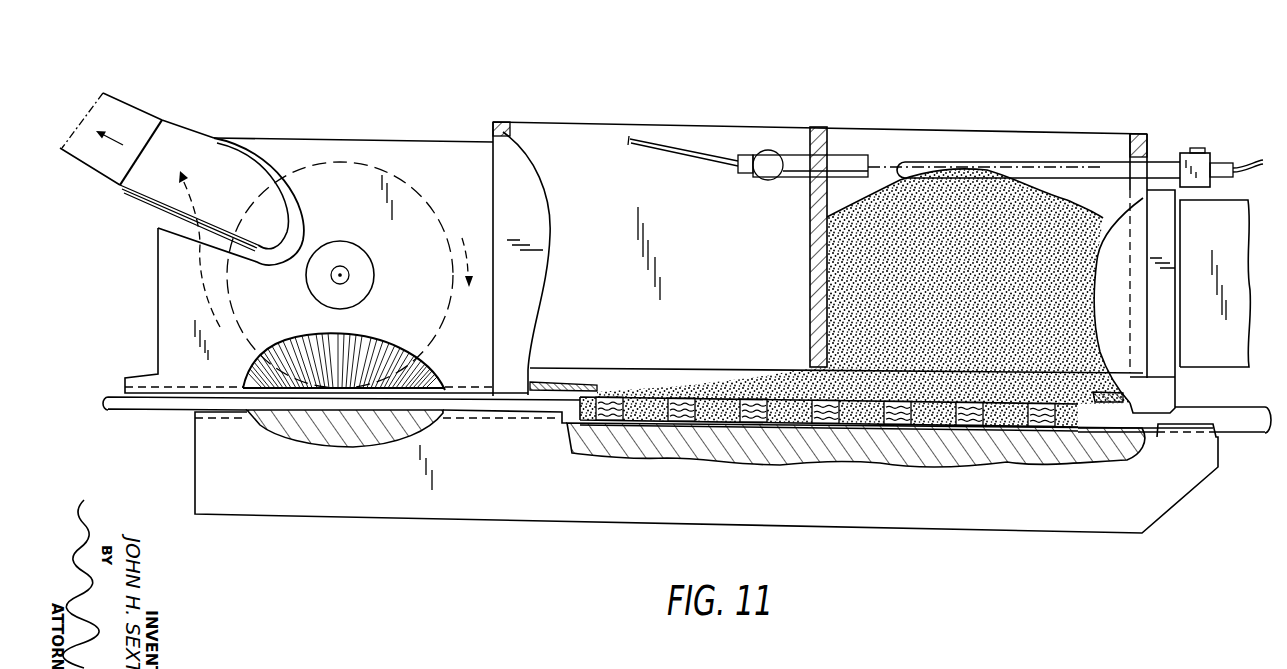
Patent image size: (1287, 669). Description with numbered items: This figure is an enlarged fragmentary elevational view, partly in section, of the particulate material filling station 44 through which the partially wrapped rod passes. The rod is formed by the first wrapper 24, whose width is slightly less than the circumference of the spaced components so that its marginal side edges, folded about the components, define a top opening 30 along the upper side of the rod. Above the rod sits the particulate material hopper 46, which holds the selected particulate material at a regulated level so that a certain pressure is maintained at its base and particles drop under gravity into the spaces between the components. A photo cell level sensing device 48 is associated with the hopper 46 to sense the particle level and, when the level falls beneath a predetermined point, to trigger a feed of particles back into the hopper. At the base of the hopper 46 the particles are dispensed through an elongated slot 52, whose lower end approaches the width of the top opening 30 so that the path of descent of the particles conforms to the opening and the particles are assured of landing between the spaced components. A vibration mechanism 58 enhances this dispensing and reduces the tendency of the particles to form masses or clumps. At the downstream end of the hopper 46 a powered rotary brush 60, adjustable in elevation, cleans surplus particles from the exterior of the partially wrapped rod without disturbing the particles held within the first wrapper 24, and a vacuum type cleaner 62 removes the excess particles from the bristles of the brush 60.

The first wrapper 24 is at (1017, 428).
The top opening 30 is at (937, 401).
The particulate material filling station 44 is at (698, 114).
The particulate material hopper 46 is at (977, 128).
The level sensing device 48 is at (1227, 167).
The elongated slot 52 is at (738, 346).
The vibration mechanism 58 is at (1232, 238).
The powered rotary brush 60 is at (378, 364).
The vacuum type cleaner 62 is at (183, 136).